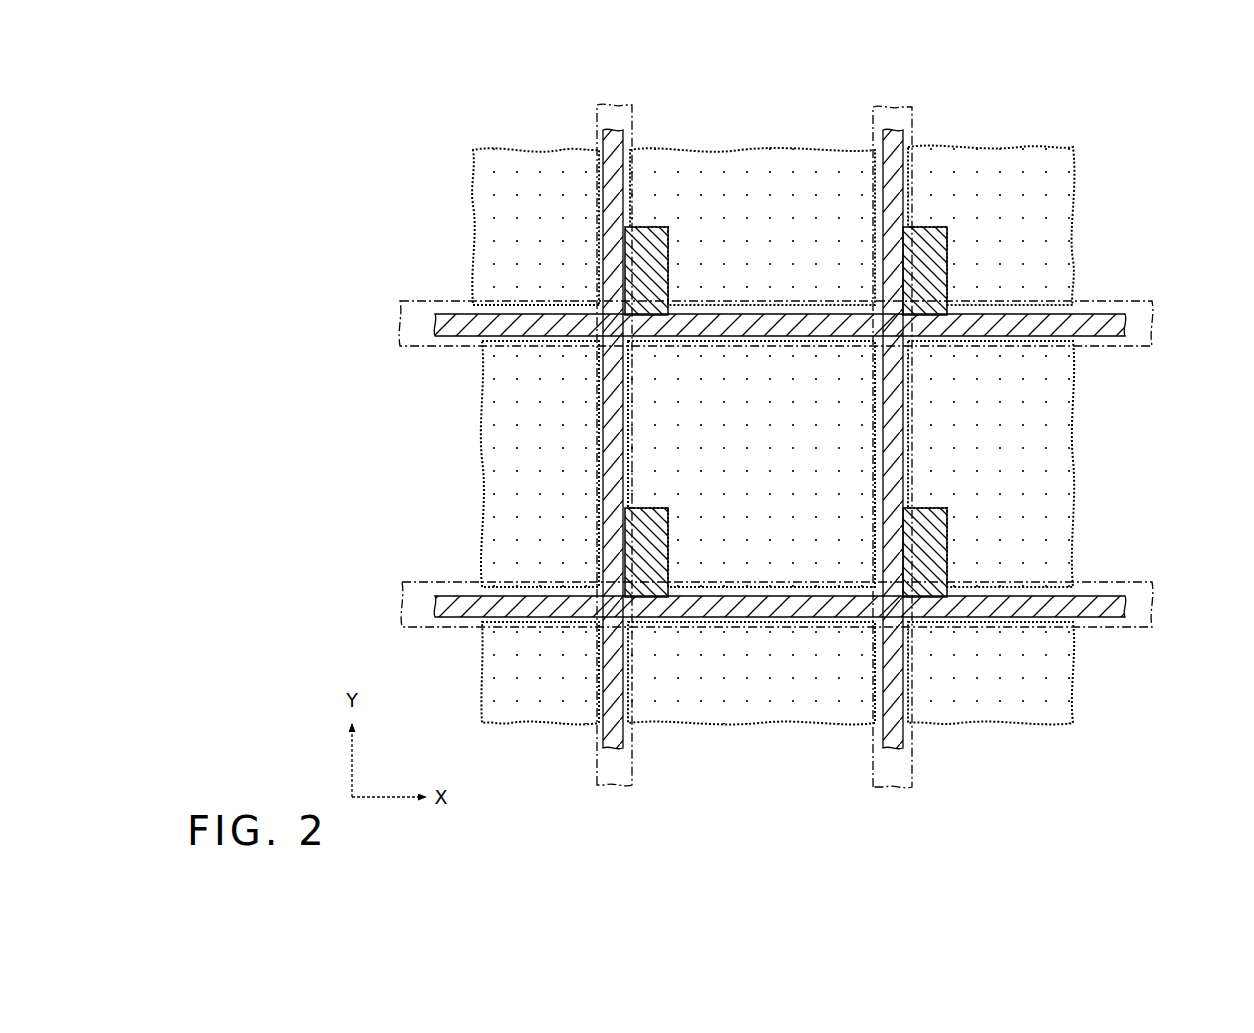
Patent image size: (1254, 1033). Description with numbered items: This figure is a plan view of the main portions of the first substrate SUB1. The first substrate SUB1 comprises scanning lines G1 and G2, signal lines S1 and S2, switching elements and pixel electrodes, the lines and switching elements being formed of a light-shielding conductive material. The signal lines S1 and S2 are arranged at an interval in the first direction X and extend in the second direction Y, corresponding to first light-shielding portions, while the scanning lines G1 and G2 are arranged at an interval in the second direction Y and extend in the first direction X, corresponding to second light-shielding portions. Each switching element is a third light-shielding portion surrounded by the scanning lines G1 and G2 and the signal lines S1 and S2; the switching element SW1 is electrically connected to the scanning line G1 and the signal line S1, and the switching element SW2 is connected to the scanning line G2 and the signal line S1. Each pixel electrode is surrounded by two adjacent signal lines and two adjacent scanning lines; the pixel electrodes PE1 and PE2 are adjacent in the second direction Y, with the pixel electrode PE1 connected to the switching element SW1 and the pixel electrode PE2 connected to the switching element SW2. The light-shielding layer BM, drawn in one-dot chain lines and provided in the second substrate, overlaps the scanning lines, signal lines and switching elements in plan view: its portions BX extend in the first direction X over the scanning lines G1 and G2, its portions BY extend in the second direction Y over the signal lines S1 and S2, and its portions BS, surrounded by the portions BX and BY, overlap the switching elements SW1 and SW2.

The first substrate SUB1 is at (1118, 128).
The light-shielding layer BM is at (893, 110).
The pixel electrode PE1 is at (755, 560).
The pixel electrode PE2 is at (775, 172).
The scanning line G1 is at (1125, 600).
The scanning line G2 is at (1125, 320).
The signal line S1 is at (613, 750).
The signal line S2 is at (888, 750).
The switching element SW1 is at (645, 573).
The switching element SW2 is at (648, 232).
The portions of light-shielding layer BS is at (675, 213).
The portions of light-shielding layer BX is at (823, 351).
The portions of light-shielding layer BY is at (639, 410).